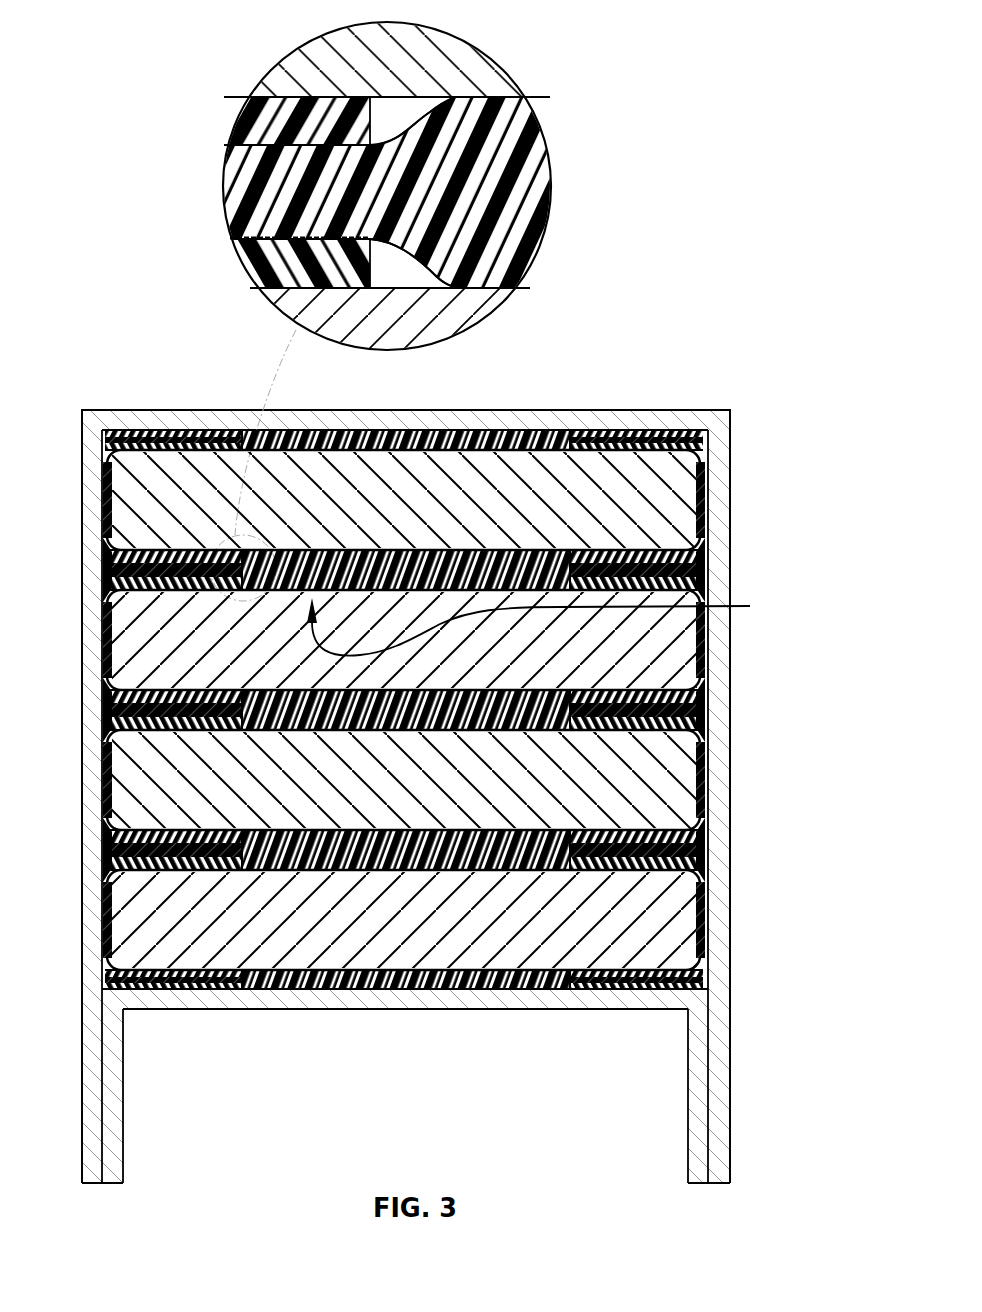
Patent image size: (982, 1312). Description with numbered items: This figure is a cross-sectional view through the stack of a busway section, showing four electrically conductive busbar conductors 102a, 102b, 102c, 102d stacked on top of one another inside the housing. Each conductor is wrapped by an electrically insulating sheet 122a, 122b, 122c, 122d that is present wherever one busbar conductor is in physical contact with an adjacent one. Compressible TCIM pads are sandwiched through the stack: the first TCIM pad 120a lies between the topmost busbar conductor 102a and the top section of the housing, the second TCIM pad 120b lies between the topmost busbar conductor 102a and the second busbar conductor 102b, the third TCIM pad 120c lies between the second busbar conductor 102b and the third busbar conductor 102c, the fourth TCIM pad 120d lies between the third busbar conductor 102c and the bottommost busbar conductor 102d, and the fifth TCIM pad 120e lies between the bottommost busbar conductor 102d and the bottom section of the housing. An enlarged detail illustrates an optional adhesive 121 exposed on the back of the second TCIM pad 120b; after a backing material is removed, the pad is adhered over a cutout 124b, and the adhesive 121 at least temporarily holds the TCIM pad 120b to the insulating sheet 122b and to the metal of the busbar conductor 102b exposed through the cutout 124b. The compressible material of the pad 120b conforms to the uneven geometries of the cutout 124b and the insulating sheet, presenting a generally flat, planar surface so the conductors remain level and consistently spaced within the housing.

The topmost busbar conductor 102a is at (675, 512).
The second busbar conductor 102b is at (675, 652).
The third busbar conductor 102c is at (673, 792).
The bottommost busbar conductor 102d is at (673, 932).
The first TCIM pad 120a is at (668, 428).
The second TCIM pad 120b is at (698, 564).
The third TCIM pad 120c is at (698, 705).
The fourth TCIM pad 120d is at (698, 845).
The fifth TCIM pad 120e is at (670, 988).
The adhesive 121 is at (418, 262).
The insulating sheet 122a is at (703, 490).
The insulating sheet 122b is at (703, 630).
The insulating sheet 122c is at (703, 770).
The insulating sheet 122d is at (703, 908).
The cutout 124b is at (557, 625).